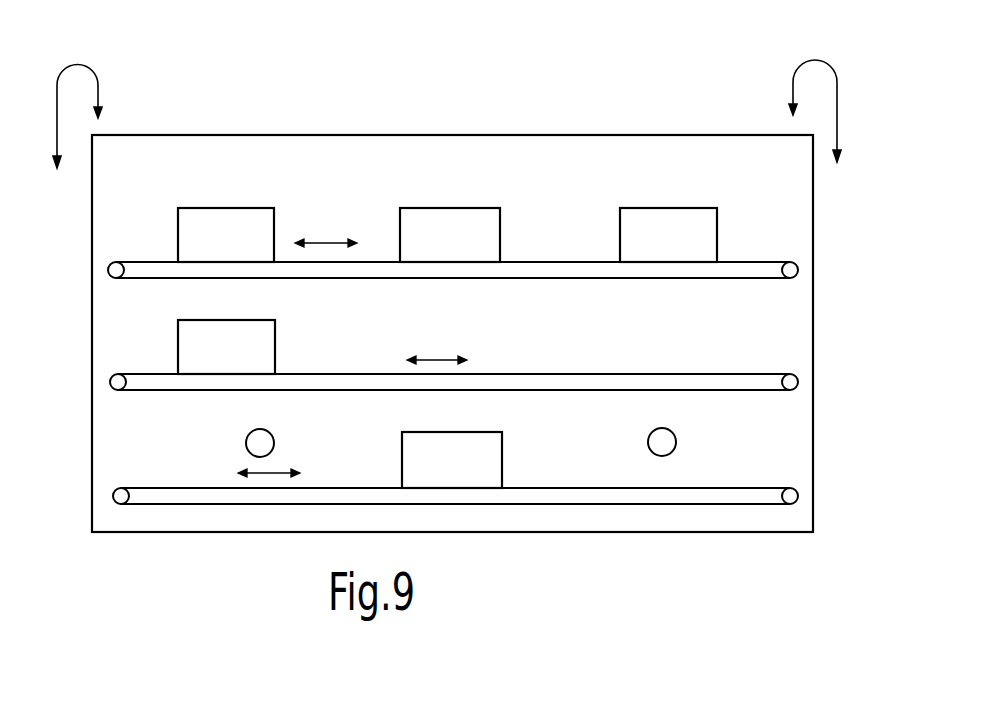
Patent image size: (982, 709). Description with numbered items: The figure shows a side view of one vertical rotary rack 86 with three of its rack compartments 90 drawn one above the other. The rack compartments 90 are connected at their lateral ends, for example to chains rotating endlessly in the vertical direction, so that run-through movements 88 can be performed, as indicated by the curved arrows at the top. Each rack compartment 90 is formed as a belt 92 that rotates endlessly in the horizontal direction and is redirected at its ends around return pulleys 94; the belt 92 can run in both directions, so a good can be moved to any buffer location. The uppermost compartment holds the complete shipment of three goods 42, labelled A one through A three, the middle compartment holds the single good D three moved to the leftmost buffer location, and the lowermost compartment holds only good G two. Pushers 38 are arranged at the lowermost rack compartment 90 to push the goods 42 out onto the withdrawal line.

The vertical rotary rack 86 is at (815, 448).
The run-through movements 88 is at (98, 85).
The rack compartments 90 is at (556, 282).
The belt 92 is at (740, 257).
The return pulleys 94 is at (121, 487).
The goods 42 is at (502, 230).
The pushers 38 is at (274, 440).